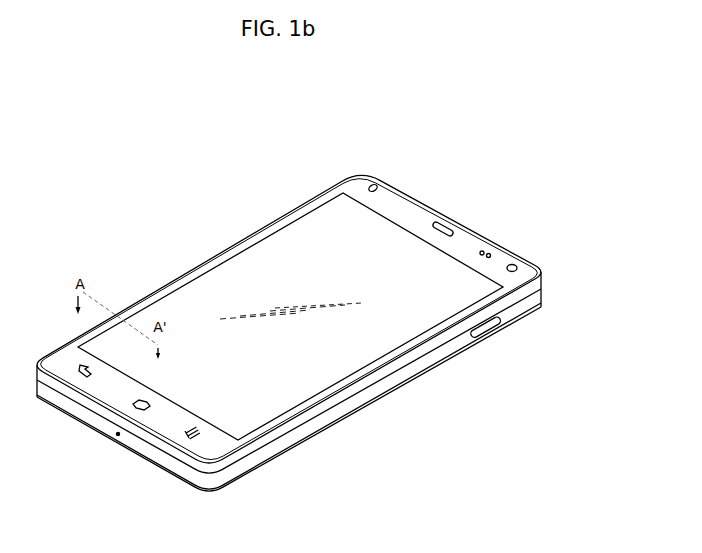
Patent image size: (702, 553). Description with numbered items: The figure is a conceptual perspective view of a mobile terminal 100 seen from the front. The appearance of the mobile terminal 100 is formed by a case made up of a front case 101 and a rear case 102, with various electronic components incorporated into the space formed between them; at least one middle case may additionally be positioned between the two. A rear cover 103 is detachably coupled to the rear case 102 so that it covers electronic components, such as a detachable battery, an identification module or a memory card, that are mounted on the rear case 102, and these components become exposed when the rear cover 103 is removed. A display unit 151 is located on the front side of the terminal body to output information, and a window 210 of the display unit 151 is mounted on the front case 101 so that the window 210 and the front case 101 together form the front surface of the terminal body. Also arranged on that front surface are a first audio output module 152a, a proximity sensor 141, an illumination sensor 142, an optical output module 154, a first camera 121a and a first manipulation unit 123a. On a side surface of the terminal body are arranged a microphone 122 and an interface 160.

The mobile terminal 100 is at (197, 206).
The front case 101 is at (541, 283).
The rear case 102 is at (541, 298).
The rear cover 103 is at (538, 310).
The window 210 is at (313, 238).
The display unit 151 is at (188, 306).
The optical output module 154 is at (380, 184).
The first audio output module 152a is at (442, 225).
The illumination sensor 142 is at (482, 250).
The proximity sensor 141 is at (490, 253).
The first camera 121a is at (518, 264).
The interface 160 is at (487, 331).
The microphone 122 is at (117, 435).
The first manipulation unit 123a is at (191, 437).